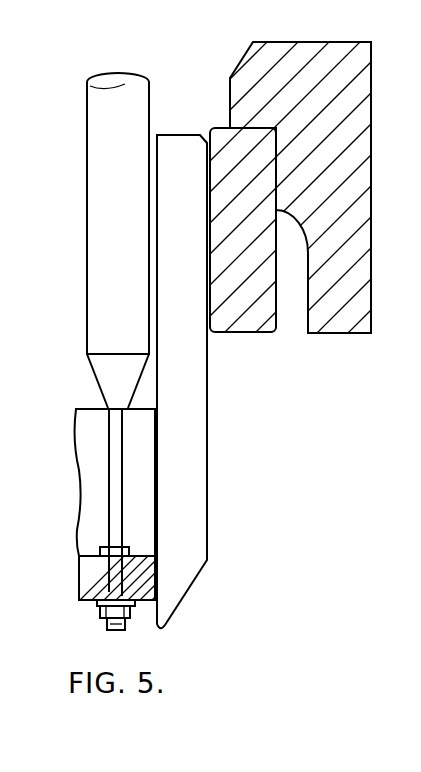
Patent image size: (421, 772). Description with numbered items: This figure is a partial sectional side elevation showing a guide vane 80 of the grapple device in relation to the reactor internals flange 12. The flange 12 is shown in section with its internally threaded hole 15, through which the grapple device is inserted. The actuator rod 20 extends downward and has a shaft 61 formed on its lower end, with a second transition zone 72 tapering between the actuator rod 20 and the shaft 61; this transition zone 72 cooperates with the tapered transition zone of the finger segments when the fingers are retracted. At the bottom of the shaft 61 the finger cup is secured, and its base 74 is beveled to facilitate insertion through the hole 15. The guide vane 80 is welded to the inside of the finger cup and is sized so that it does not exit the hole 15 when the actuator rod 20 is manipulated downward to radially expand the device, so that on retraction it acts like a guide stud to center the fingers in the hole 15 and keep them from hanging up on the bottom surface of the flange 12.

The flange 12 is at (318, 42).
The threaded hole 15 is at (212, 130).
The actuator rod 20 is at (110, 176).
The shaft 61 is at (115, 492).
The second transition zone 72 is at (98, 376).
The base 74 is at (98, 570).
The guide vane 80 is at (198, 472).